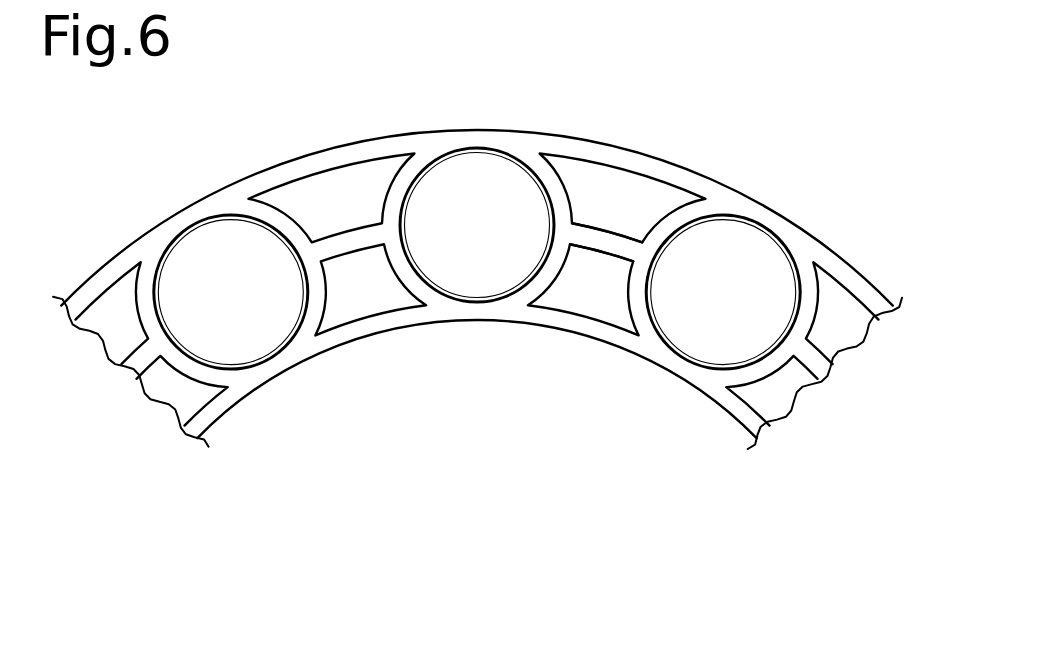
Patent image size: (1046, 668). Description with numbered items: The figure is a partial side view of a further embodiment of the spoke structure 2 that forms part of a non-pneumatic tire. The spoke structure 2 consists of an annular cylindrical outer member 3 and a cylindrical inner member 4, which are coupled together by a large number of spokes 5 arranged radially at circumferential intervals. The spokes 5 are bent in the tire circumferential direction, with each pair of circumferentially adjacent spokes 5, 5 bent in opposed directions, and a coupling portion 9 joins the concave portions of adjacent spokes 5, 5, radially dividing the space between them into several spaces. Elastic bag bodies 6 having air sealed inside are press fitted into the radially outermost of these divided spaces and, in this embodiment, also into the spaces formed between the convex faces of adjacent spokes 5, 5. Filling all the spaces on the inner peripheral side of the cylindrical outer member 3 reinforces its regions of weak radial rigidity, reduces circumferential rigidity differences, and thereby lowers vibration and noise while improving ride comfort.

The spoke structure 2 is at (477, 264).
The cylindrical outer member 3 is at (673, 173).
The cylindrical inner member 4 is at (613, 336).
The spoke 5 is at (527, 183).
The elastic bag body 6 is at (372, 180).
The coupling portion 9 is at (587, 238).